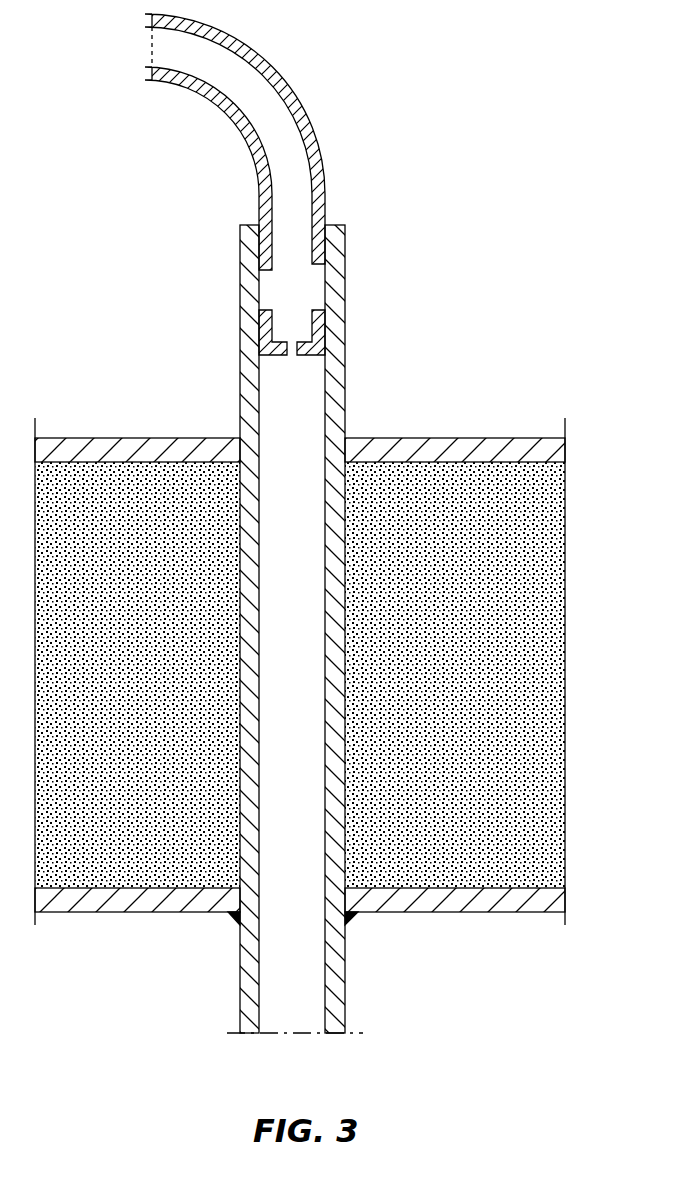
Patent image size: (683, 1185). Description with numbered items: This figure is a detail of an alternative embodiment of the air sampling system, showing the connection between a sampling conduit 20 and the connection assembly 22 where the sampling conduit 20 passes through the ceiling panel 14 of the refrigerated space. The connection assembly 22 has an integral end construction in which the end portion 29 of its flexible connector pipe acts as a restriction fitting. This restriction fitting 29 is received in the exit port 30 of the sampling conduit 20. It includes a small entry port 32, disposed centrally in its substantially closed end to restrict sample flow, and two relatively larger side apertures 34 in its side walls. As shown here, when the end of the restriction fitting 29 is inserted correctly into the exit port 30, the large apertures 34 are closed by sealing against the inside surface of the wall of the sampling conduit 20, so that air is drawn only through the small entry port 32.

The ceiling panel 14 is at (459, 681).
The sampling conduit 20 is at (335, 983).
The connection assembly 22 is at (284, 56).
The end portion of the flexible connector pipe 29 is at (333, 245).
The exit port 30 is at (281, 142).
The small entry port 32 is at (292, 356).
The side apertures 34 is at (318, 283).